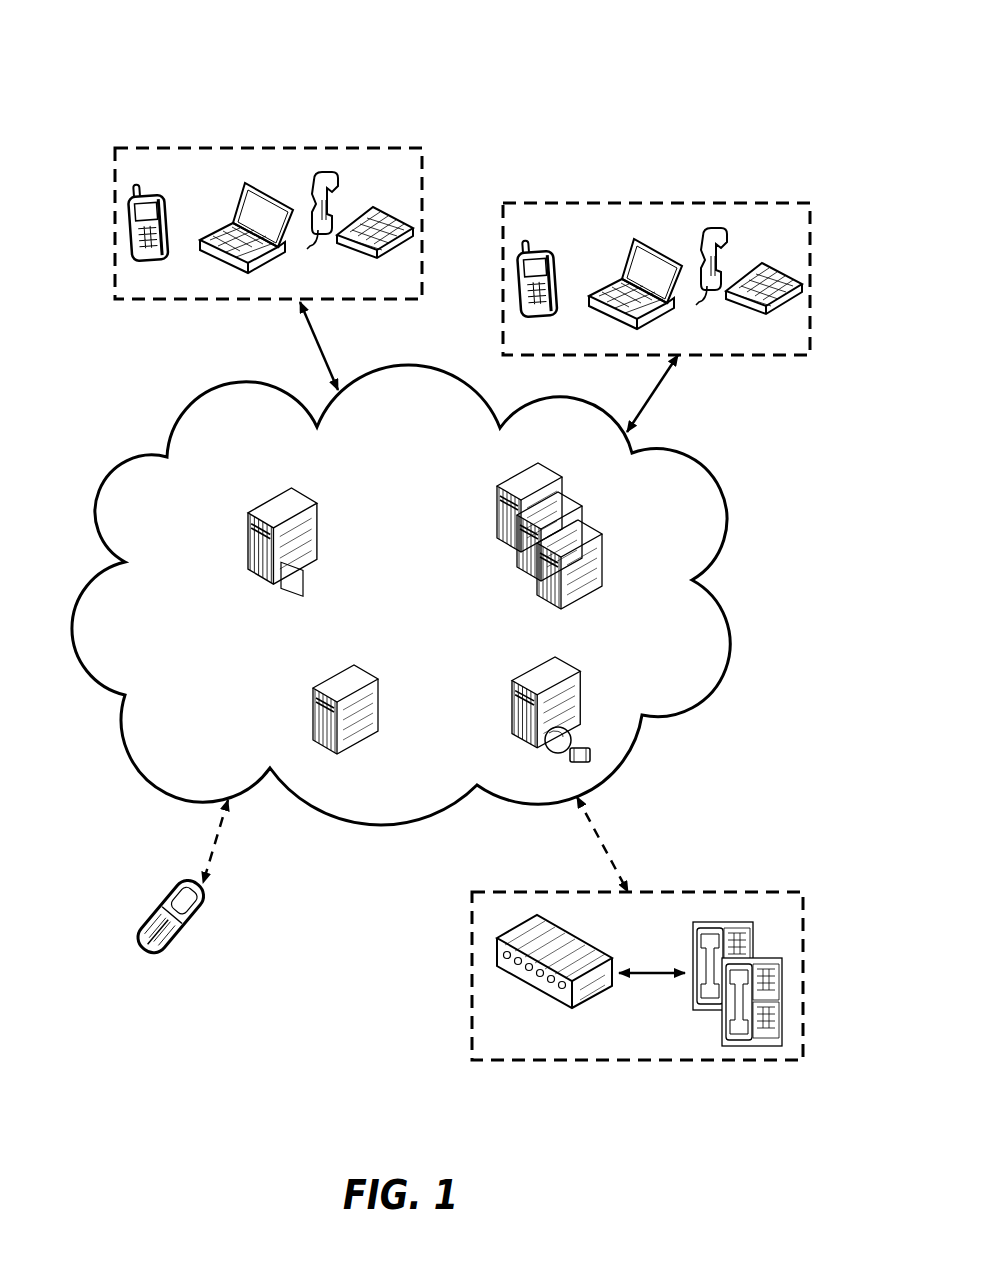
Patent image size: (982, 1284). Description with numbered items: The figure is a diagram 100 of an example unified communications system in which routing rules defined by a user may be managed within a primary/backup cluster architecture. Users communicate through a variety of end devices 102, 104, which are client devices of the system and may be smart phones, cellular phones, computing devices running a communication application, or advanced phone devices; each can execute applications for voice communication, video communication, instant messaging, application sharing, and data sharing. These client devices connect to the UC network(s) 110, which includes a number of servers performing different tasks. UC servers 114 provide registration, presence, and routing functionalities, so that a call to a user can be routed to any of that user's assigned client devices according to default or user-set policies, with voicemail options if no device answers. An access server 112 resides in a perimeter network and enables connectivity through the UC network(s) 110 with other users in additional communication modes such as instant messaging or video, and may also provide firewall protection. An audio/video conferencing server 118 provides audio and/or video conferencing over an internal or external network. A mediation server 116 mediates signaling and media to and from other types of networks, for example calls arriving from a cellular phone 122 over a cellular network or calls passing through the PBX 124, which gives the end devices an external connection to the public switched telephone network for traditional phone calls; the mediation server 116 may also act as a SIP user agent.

The diagram 100 is at (676, 50).
The end device 102 is at (166, 141).
The end device 104 is at (554, 196).
The UC network(s) 110 is at (194, 392).
The access server 112 is at (285, 478).
The UC servers 114 is at (518, 462).
The mediation server 116 is at (323, 671).
The audio/video conferencing server 118 is at (531, 662).
The cellular phone 122 is at (156, 898).
The PBX 124 is at (496, 880).